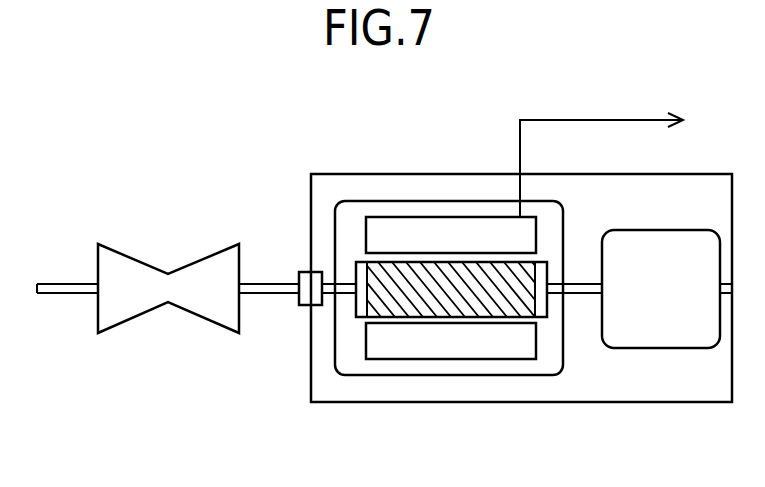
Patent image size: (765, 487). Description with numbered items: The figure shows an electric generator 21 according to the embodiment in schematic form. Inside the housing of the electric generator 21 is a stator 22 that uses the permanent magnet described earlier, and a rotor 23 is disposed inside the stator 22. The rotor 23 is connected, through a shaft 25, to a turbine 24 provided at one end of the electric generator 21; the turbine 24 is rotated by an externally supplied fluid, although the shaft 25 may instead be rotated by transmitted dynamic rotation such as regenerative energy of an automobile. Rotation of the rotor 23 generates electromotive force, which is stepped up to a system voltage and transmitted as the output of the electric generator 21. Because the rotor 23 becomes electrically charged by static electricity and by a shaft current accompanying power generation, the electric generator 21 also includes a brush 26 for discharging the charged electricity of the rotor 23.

The electric generator 21 is at (355, 173).
The stator 22 is at (419, 350).
The rotor 23 is at (463, 307).
The turbine 24 is at (210, 257).
The shaft 25 is at (277, 294).
The brush 26 is at (652, 335).